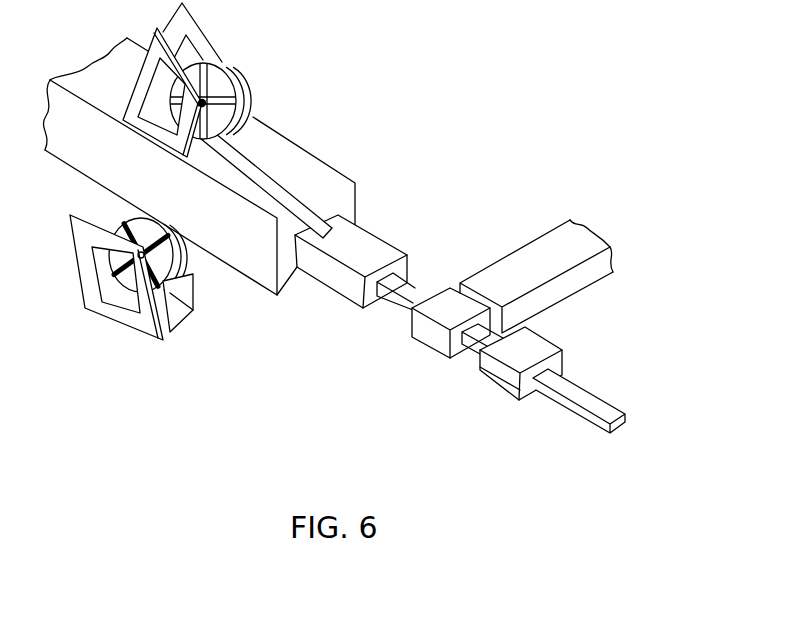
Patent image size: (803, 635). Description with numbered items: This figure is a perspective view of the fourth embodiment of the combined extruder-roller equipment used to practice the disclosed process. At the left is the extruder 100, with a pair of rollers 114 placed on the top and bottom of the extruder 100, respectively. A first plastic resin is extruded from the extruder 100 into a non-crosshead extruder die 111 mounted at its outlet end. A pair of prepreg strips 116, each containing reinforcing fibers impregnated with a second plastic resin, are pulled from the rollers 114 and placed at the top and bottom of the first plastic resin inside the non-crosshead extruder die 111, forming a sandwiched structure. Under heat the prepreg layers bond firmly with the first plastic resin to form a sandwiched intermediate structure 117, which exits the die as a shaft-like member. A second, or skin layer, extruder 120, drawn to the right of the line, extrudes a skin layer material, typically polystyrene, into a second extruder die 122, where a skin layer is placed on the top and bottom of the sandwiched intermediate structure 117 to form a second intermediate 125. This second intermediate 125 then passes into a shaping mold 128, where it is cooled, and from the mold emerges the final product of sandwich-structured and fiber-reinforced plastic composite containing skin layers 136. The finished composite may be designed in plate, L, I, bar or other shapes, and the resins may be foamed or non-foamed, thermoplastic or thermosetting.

The extruder 100 is at (320, 177).
The non-crosshead extruder die 111 is at (332, 272).
The rollers 114 is at (243, 98).
The prepreg strips 116 is at (288, 187).
The sandwiched intermediate structure 117 is at (410, 288).
The second extruder 120 is at (555, 255).
The second extruder die 122 is at (426, 342).
The second intermediate 125 is at (528, 323).
The shaping mold 128 is at (498, 370).
The final product of sandwich-structured and fiber-reinforced plastic composite cont 136 is at (578, 398).